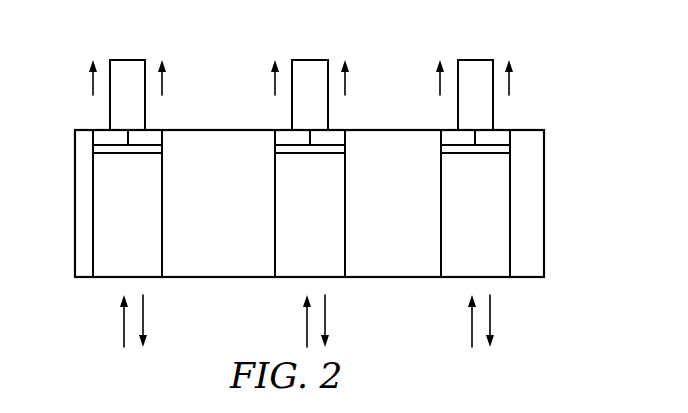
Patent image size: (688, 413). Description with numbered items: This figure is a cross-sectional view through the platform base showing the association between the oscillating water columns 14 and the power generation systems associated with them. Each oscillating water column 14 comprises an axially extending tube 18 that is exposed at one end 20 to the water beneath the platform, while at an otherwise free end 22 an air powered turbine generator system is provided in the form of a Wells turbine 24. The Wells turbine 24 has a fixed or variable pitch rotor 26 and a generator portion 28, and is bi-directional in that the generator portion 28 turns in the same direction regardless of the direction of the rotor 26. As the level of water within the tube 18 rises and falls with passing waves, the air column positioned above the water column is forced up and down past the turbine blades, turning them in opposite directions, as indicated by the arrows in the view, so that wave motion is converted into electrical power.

The oscillating water column 14 is at (113, 211).
The axially extending tube 18 is at (93, 247).
The end exposed to water 20 is at (108, 278).
The free end 22 is at (156, 137).
The Wells turbine 24 is at (86, 42).
The rotor 26 is at (152, 150).
The generator portion 28 is at (131, 65).